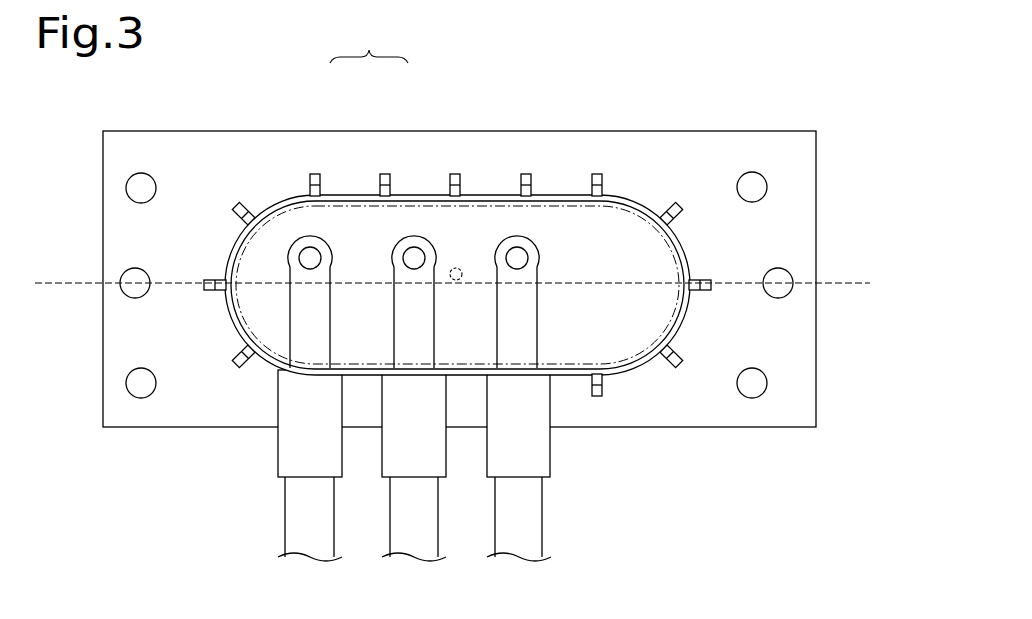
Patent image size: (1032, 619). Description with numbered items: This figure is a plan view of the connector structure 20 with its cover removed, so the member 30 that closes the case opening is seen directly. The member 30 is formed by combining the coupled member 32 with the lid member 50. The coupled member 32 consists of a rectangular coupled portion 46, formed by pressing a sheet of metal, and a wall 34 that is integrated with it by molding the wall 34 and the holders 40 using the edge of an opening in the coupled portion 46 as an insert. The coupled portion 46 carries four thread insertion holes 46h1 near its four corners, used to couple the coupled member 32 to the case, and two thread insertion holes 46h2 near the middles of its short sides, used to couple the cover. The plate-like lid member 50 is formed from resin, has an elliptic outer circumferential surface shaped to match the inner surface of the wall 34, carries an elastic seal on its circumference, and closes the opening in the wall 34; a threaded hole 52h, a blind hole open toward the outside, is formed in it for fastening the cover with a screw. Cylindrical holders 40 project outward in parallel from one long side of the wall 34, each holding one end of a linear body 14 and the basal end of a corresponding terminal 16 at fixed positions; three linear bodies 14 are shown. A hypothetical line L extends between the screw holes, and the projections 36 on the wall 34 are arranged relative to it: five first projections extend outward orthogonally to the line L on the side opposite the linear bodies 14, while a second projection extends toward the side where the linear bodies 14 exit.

The linear body 14 is at (335, 530).
The terminal 16 is at (333, 262).
The connector structure 20 is at (656, 124).
The member 30 is at (533, 124).
The coupled member 32 is at (369, 43).
The wall 34 is at (348, 195).
The projection 36 is at (238, 208).
The holder 40 is at (341, 448).
The coupled portion 46 is at (388, 130).
The thread insertion hole 46h1 is at (138, 187).
The thread insertion hole 46h2 is at (133, 281).
The lid member 50 is at (624, 197).
The threaded hole 52h is at (455, 268).
The hypothetical line L is at (870, 283).